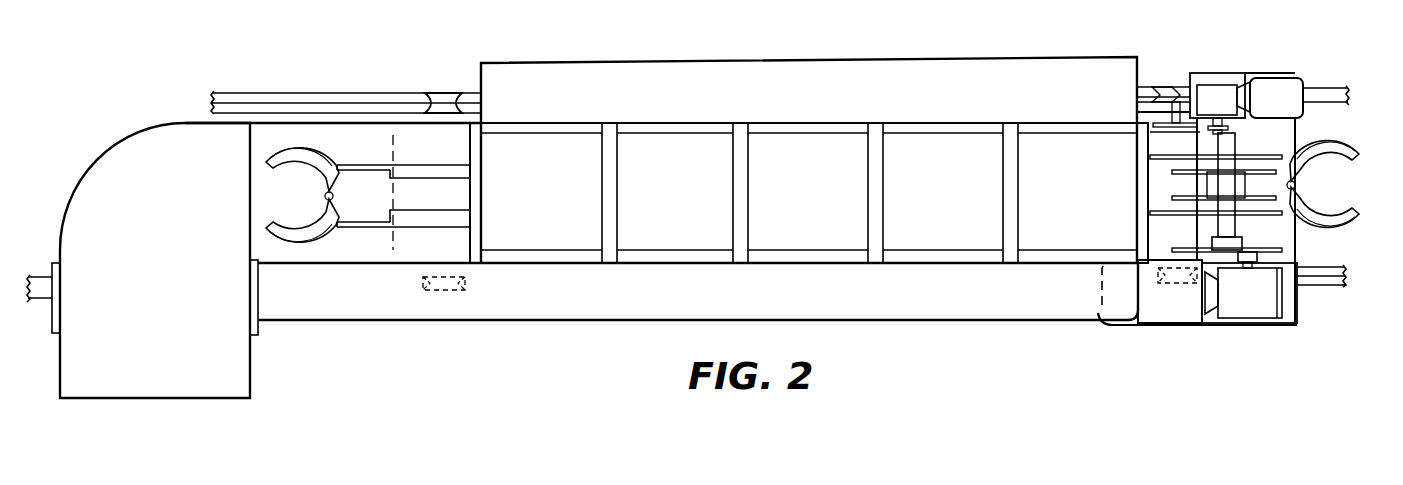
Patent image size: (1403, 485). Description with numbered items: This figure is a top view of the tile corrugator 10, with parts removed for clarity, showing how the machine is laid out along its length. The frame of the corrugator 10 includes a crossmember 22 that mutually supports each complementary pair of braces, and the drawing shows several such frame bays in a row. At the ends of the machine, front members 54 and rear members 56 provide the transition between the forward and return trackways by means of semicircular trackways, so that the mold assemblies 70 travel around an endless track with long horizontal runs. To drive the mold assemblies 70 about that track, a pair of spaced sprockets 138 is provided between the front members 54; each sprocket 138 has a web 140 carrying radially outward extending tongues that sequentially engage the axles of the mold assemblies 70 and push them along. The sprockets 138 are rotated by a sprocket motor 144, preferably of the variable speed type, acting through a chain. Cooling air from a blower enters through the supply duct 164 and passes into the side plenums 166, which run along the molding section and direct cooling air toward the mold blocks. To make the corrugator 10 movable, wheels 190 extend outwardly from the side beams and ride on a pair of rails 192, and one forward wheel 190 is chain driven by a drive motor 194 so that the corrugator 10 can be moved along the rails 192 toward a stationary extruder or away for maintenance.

The tile corrugator 10 is at (1232, 22).
The crossmember 22 is at (600, 204).
The front members 54 is at (1282, 216).
The rear members 56 is at (358, 165).
The mold assemblies 70 is at (320, 248).
The sprockets 138 is at (1207, 170).
The web 140 is at (1193, 195).
The sprocket motor 144 is at (1158, 313).
The supply duct 164 is at (152, 243).
The side plenums 166 is at (902, 97).
The wheels 190 is at (441, 93).
The rails 192 is at (360, 92).
The drive motor 194 is at (1302, 78).